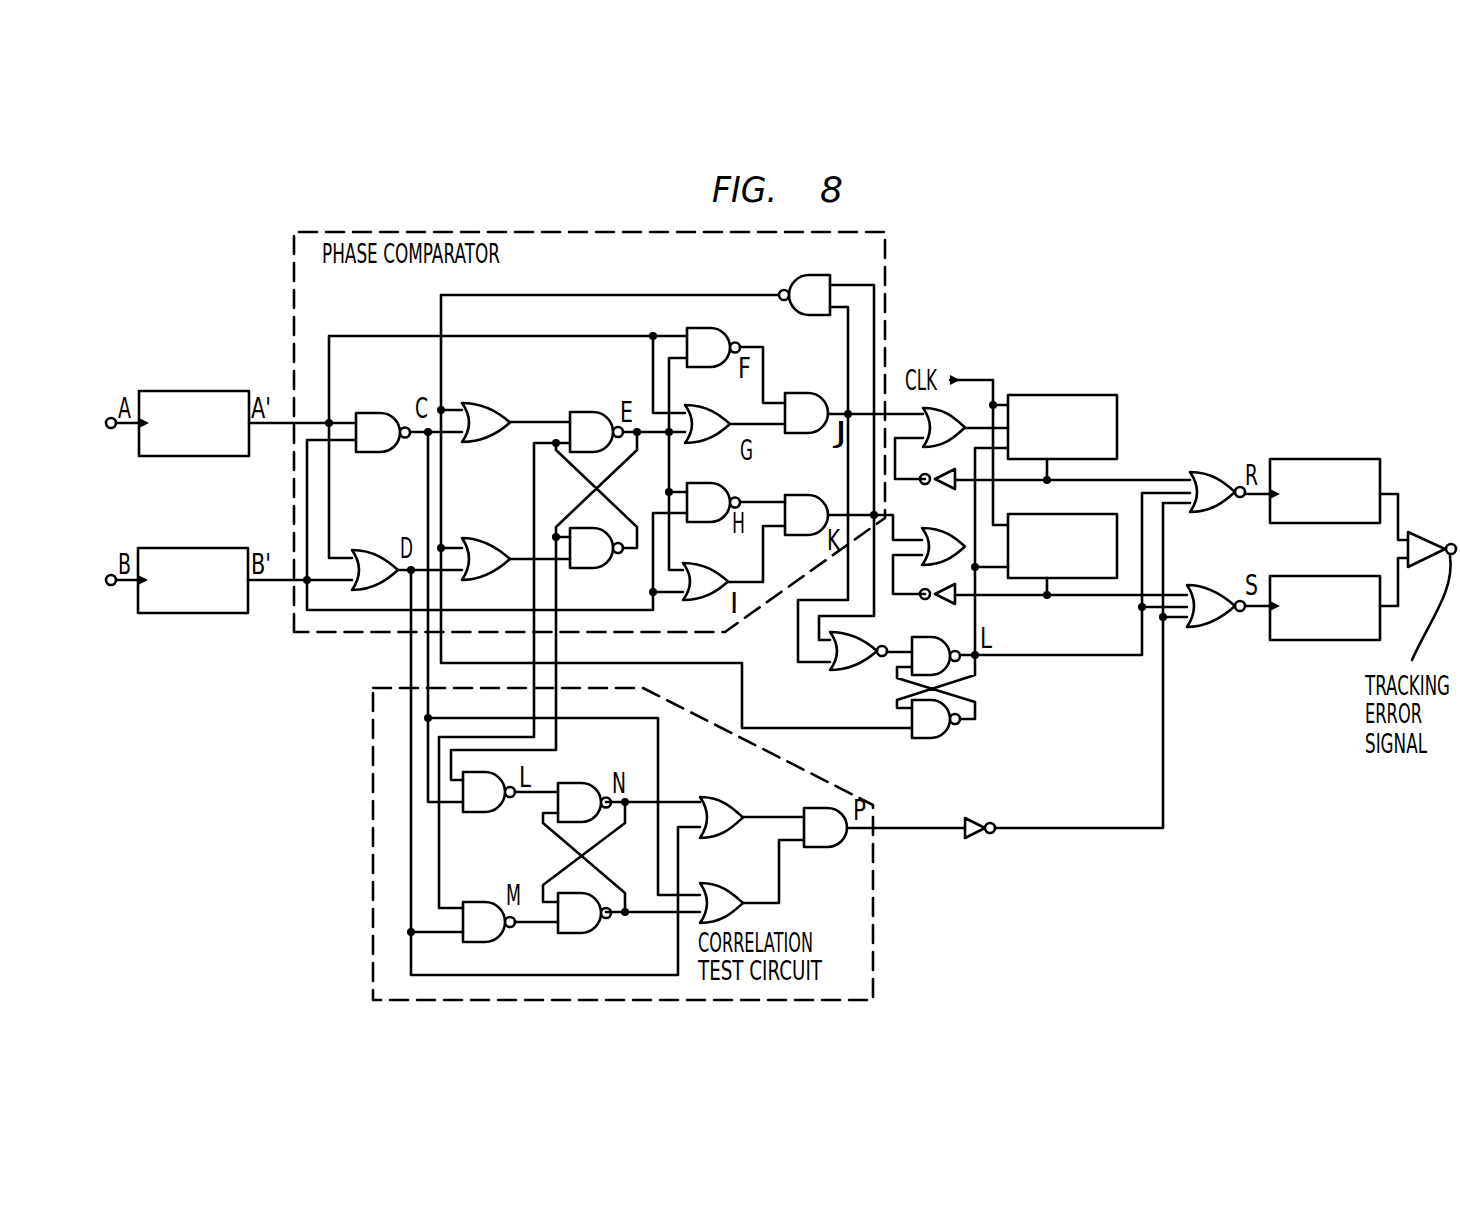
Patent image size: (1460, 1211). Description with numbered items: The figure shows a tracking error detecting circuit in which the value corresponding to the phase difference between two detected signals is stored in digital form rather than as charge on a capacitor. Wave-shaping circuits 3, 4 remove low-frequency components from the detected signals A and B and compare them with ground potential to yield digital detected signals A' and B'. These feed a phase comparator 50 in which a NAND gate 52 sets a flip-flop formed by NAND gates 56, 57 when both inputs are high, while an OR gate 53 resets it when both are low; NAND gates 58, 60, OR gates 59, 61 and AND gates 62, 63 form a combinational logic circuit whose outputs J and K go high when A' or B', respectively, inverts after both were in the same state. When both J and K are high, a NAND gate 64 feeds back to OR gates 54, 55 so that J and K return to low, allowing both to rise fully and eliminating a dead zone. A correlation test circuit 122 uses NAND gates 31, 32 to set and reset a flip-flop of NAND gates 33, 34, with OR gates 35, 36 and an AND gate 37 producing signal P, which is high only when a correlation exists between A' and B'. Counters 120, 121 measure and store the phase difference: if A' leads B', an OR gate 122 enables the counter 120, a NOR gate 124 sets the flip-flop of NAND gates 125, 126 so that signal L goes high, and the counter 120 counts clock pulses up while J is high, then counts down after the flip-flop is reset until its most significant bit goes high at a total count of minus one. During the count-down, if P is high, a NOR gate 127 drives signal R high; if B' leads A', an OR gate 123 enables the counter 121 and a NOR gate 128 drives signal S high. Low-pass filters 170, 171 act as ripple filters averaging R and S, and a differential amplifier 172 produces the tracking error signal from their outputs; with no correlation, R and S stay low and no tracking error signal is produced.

The wave-shaping circuit 3 is at (172, 391).
The wave-shaping circuit 4 is at (190, 548).
The NAND gate 31 is at (500, 814).
The NAND gate 32 is at (504, 941).
The NAND gate 33 is at (577, 784).
The NAND gate 34 is at (602, 933).
The OR gate 35 is at (721, 806).
The OR gate 36 is at (721, 891).
The AND gate 37 is at (840, 847).
The phase comparator 50 is at (917, 258).
The NAND gate 52 is at (368, 413).
The OR gate 53 is at (390, 553).
The OR gate 54 is at (475, 404).
The OR gate 55 is at (480, 539).
The NAND gate 56 is at (580, 412).
The NAND gate 57 is at (600, 568).
The NAND gate 58 is at (713, 322).
The OR gate 59 is at (712, 406).
The NAND gate 60 is at (710, 484).
The OR gate 61 is at (706, 567).
The AND gate 62 is at (806, 393).
The AND gate 63 is at (806, 495).
The NAND gate 64 is at (808, 275).
The counter 120 is at (1055, 395).
The counter 121 is at (1056, 514).
The OR gate 122 is at (957, 411).
The OR gate 123 is at (940, 529).
The NOR gate 124 is at (862, 672).
The NAND gate 125 is at (946, 638).
The NAND gate 126 is at (940, 736).
The NOR gate 127 is at (1205, 473).
The NOR gate 128 is at (1218, 578).
The low-pass filter 170 is at (1300, 459).
The low-pass filter 171 is at (1325, 641).
The differential amplifier 172 is at (1430, 535).